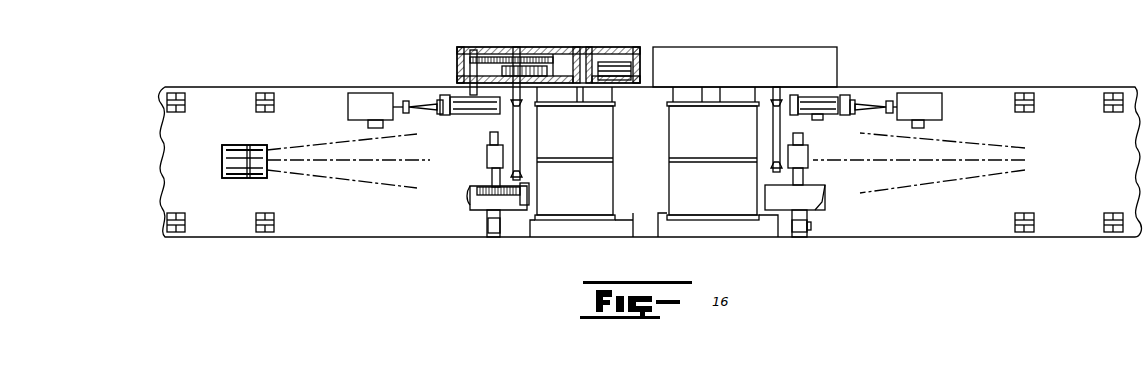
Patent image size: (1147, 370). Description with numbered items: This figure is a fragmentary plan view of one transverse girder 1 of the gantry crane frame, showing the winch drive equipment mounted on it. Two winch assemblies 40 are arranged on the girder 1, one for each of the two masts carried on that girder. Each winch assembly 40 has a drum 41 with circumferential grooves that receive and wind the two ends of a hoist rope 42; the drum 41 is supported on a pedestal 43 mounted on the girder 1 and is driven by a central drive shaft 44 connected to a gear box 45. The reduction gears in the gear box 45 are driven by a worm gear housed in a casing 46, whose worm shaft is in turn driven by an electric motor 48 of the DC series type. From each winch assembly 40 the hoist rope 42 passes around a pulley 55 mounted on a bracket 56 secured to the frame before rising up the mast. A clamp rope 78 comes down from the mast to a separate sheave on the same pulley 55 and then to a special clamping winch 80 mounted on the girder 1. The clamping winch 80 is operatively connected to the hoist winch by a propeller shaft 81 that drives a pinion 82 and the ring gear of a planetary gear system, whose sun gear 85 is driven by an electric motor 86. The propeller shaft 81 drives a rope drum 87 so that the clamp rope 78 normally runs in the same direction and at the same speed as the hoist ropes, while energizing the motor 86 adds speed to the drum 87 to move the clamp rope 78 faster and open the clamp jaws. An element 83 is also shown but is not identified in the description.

The transverse girder 1 is at (890, 238).
The winch assembly 40 is at (503, 42).
The drum 41 is at (583, 207).
The hoist rope 42 is at (316, 147).
The pedestal 43 is at (590, 226).
The central drive shaft 44 is at (558, 58).
The gear box 45 is at (600, 48).
The worm gear casing 46 is at (462, 116).
The electric motor 48 is at (352, 94).
The pulley 55 is at (242, 178).
The bracket 56 is at (226, 178).
The clamp rope 78 is at (370, 167).
The clamping winch 80 is at (486, 153).
The propeller shaft 81 is at (520, 148).
The pinion 82 is at (524, 184).
The gear bearing 83 is at (529, 204).
The sun gear 85 is at (478, 207).
The electric motor 86 is at (490, 230).
The rope drum 87 is at (487, 160).